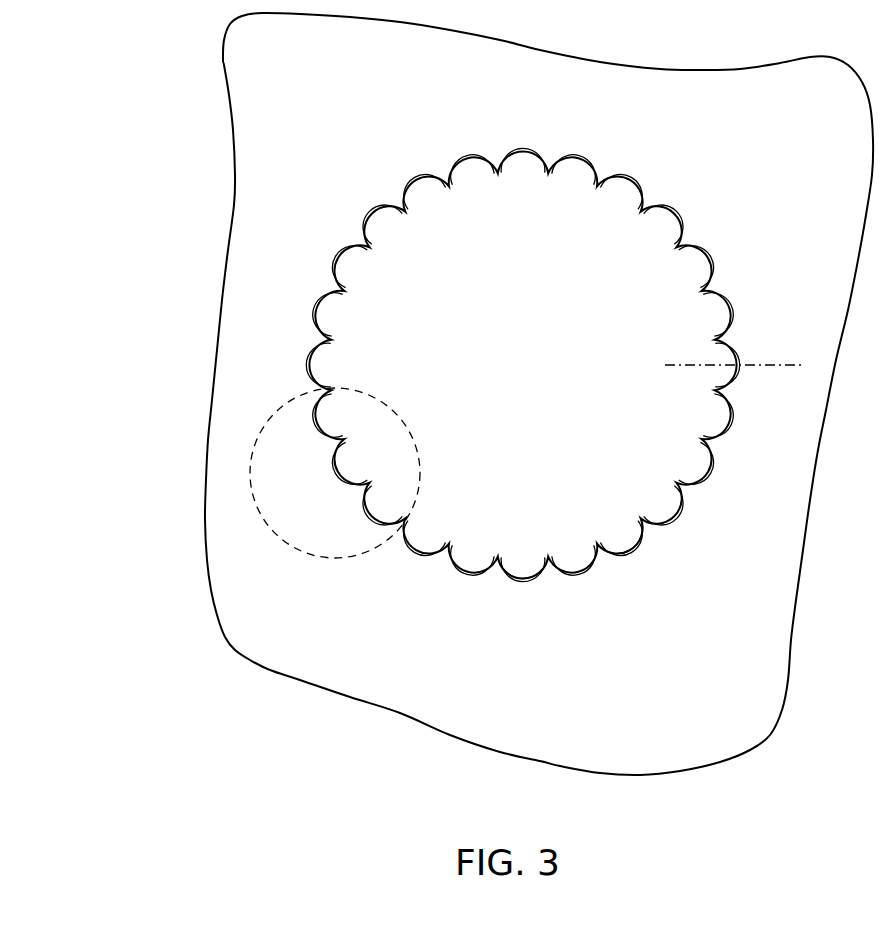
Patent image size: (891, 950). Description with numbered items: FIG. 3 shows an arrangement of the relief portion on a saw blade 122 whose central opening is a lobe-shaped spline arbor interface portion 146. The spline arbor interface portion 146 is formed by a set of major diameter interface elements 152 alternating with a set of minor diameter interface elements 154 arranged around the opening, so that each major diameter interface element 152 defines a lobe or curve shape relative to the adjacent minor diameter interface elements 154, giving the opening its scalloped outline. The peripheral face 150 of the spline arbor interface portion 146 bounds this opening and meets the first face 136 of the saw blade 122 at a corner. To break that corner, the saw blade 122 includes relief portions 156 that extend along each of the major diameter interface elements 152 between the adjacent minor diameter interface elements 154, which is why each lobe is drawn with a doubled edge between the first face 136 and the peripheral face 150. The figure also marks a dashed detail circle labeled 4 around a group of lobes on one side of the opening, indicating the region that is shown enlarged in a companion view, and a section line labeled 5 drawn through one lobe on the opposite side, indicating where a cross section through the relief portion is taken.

The saw blade 122 is at (234, 191).
The first face 136 is at (555, 666).
The spline arbor interface portion 146 is at (438, 232).
The peripheral face 150 is at (472, 157).
The major diameter interface elements 152 is at (620, 538).
The minor diameter interface elements 154 is at (533, 540).
The relief portions 156 is at (454, 160).
The detail circle of FIG. 4 is at (250, 471).
The section line 5- 5 is at (773, 330).